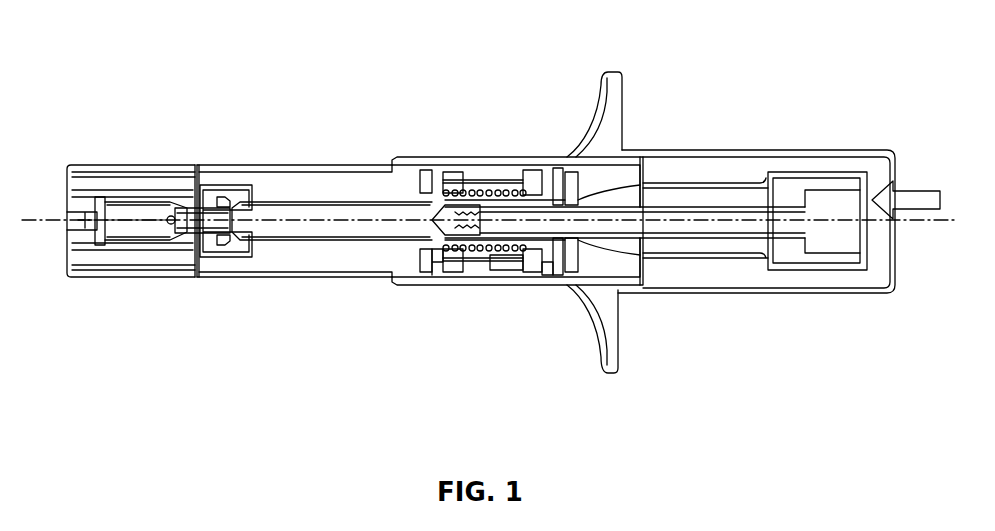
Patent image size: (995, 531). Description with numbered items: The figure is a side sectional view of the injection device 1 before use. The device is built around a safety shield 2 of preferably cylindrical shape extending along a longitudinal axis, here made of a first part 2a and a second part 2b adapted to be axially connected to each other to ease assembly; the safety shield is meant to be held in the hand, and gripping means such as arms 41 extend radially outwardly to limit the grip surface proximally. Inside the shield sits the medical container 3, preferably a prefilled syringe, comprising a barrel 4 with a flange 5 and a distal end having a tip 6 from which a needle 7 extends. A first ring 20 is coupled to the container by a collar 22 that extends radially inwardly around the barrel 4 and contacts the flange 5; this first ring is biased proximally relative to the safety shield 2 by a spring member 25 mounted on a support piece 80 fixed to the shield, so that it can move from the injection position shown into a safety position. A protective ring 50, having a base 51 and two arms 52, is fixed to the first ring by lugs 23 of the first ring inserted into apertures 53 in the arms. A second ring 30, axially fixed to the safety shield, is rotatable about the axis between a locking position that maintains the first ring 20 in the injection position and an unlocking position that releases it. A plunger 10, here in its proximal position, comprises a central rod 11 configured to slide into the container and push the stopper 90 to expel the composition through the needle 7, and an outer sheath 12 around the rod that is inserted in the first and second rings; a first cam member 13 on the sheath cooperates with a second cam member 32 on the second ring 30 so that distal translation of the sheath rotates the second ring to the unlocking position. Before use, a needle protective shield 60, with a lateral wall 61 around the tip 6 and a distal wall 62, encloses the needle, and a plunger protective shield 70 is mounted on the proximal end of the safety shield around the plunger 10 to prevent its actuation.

The injection device 1 is at (753, 45).
The safety shield 2 is at (352, 160).
The first part 2a is at (632, 290).
The second part 2b is at (238, 168).
The medical container 3 is at (345, 243).
The barrel 4 is at (280, 243).
The flange 5 is at (548, 283).
The tip 6 is at (195, 212).
The needle 7 is at (163, 222).
The plunger 10 is at (785, 266).
The central rod 11 is at (692, 224).
The outer sheath 12 is at (743, 183).
The first cam member 13 is at (630, 190).
The first ring 20 is at (500, 170).
The collar 22 is at (540, 168).
The lugs 23 is at (510, 273).
The spring member 25 is at (483, 273).
The second ring 30 is at (462, 168).
The second cam member 32 is at (432, 170).
The arms 41 is at (614, 100).
The protective ring 50 is at (587, 193).
The base 51 is at (566, 168).
The arms 52 is at (533, 280).
The apertures 53 is at (515, 270).
The needle protective shield 60 is at (97, 170).
The lateral wall 61 is at (97, 276).
The distal wall 62 is at (62, 252).
The plunger protective shield 70 is at (793, 162).
The support piece 80 is at (432, 270).
The stopper 90 is at (453, 270).